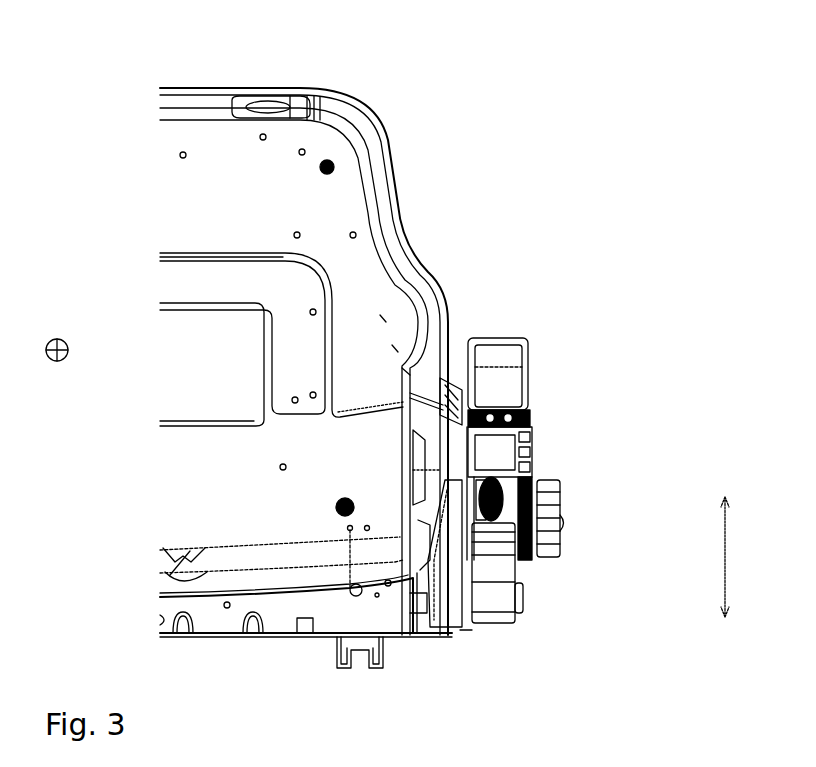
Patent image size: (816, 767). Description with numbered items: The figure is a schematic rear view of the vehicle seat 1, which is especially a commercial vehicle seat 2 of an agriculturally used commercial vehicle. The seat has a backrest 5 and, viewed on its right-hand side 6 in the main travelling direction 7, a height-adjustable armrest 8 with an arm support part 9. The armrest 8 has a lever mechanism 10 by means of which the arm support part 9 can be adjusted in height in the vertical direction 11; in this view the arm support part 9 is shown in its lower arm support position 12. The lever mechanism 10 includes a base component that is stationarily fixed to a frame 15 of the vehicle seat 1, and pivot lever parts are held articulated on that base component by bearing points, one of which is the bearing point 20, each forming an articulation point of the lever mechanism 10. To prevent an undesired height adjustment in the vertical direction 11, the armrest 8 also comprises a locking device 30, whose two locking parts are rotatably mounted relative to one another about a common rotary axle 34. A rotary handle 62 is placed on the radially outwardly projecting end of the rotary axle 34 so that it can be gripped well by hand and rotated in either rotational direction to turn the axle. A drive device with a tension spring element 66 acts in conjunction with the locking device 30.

The vehicle seat 1 is at (616, 104).
The commercial vehicle seat 2 is at (84, 146).
The backrest 5 is at (178, 226).
The right-hand side 6 is at (683, 379).
The main travelling direction 7 is at (57, 338).
The height-adjustable armrest 8 is at (497, 222).
The arm support part 9 is at (505, 338).
The lever mechanism 10 is at (538, 638).
The vertical direction 11 is at (726, 555).
The lower arm support position 12 is at (671, 262).
The frame 15 is at (453, 636).
The bearing point 20 is at (524, 597).
The locking device 30 is at (551, 465).
The rotary axle 34 is at (565, 523).
The rotary handle 62 is at (560, 495).
The tension spring element 66 is at (487, 527).